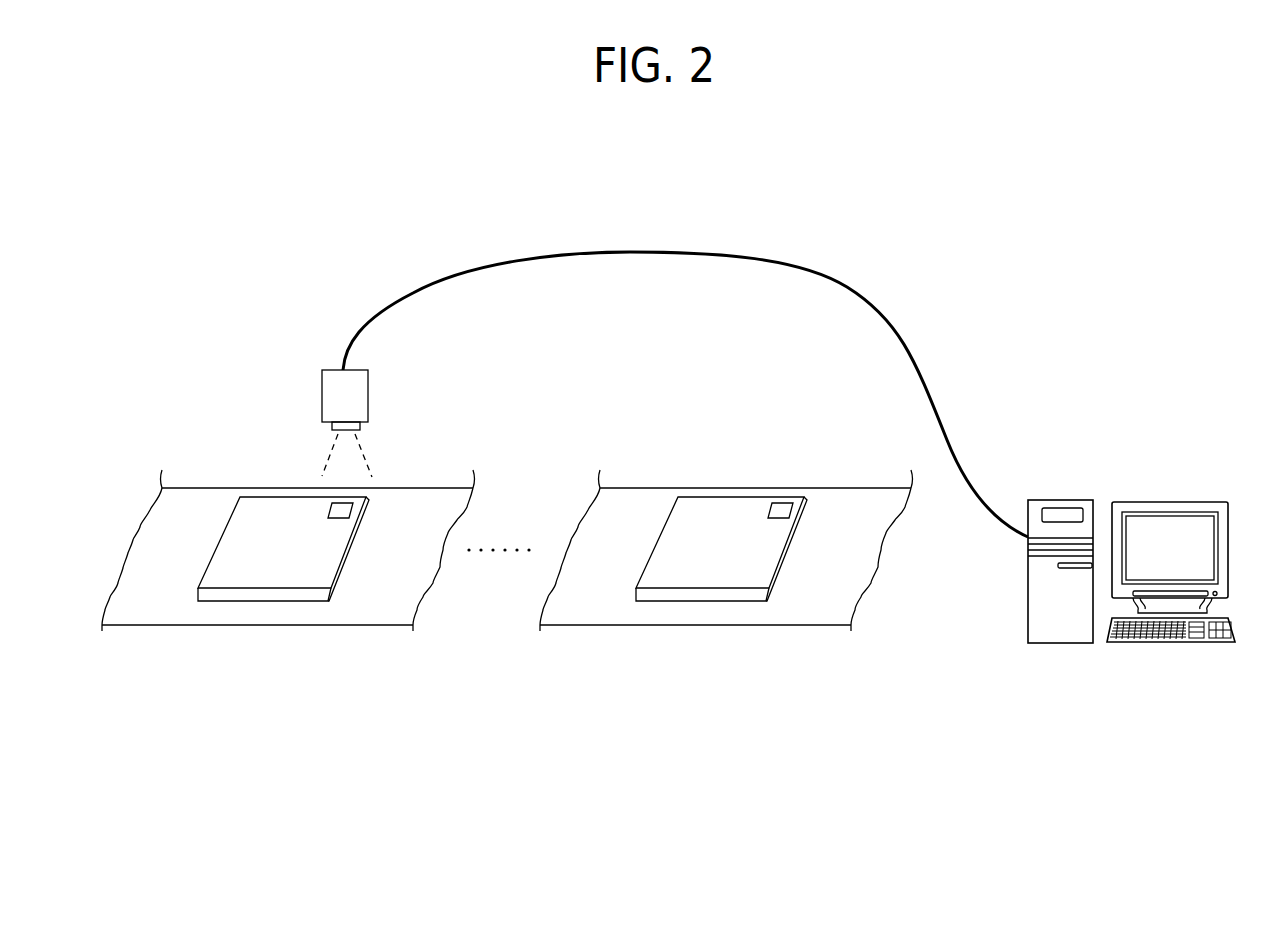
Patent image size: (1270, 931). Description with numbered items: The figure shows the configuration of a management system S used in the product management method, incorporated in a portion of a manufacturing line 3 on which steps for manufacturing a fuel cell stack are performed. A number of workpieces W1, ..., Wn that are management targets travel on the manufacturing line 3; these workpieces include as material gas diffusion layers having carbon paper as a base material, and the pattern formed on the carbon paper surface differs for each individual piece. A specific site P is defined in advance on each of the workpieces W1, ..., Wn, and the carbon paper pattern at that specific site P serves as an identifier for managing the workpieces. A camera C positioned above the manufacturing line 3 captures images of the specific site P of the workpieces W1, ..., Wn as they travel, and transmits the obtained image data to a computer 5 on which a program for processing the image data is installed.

The management system S is at (1139, 302).
The manufacturing line 3 is at (162, 415).
The workpiece W1 is at (260, 512).
The workpiece Wn is at (698, 512).
The specific site P is at (345, 505).
The camera C is at (333, 378).
The computer 5 is at (1085, 499).